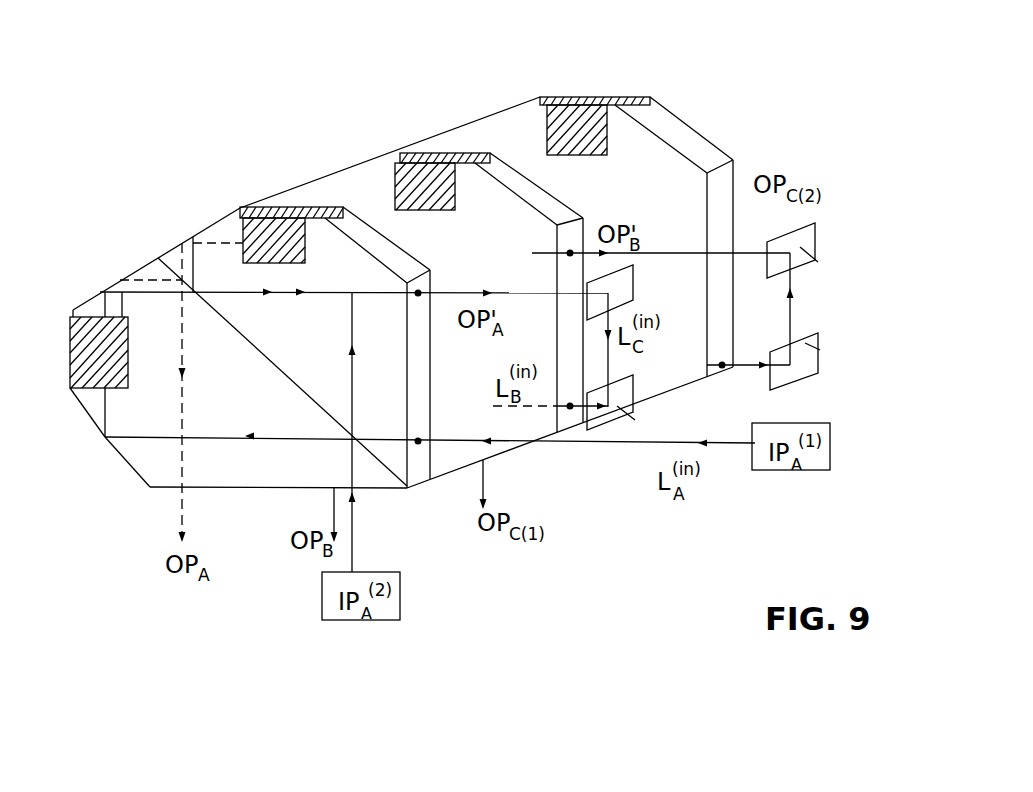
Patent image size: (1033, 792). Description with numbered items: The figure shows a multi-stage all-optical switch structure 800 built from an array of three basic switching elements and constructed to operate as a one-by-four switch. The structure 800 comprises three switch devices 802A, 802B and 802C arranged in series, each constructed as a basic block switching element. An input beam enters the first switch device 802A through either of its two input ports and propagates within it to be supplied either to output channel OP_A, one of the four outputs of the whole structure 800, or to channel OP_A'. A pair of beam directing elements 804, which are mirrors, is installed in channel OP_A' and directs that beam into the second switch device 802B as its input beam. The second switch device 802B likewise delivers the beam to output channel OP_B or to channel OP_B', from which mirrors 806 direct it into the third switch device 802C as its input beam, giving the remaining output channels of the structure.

The multi-stage all-optical switch structure 800 is at (215, 82).
The first switch device 802A is at (150, 248).
The second switch device 802B is at (301, 170).
The third switch device 802C is at (480, 110).
The pair of beam directing elements 804 is at (627, 288).
The mirrors 806 is at (800, 248).